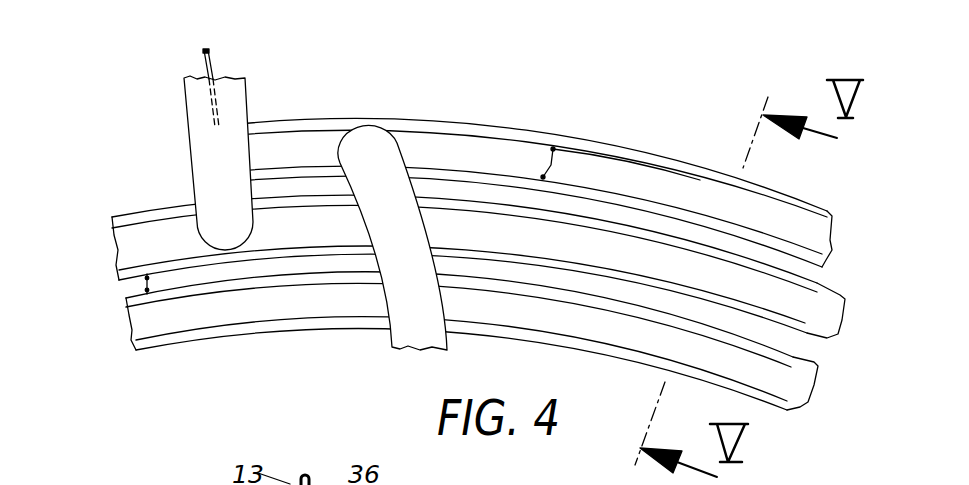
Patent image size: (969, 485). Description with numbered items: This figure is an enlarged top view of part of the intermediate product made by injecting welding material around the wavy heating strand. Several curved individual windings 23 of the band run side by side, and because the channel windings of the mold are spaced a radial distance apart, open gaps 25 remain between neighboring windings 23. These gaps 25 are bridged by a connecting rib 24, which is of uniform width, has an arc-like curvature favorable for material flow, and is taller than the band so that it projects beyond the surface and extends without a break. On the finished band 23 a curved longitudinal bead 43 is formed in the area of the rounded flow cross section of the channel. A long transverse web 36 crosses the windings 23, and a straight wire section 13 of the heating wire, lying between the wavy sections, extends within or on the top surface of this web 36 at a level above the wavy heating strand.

The straight wire section 13 is at (211, 70).
The band winding 23 is at (842, 322).
The connecting rib 24 is at (417, 333).
The open gap 25 is at (144, 283).
The transverse web 36 is at (197, 103).
The longitudinal bead 43 is at (541, 163).